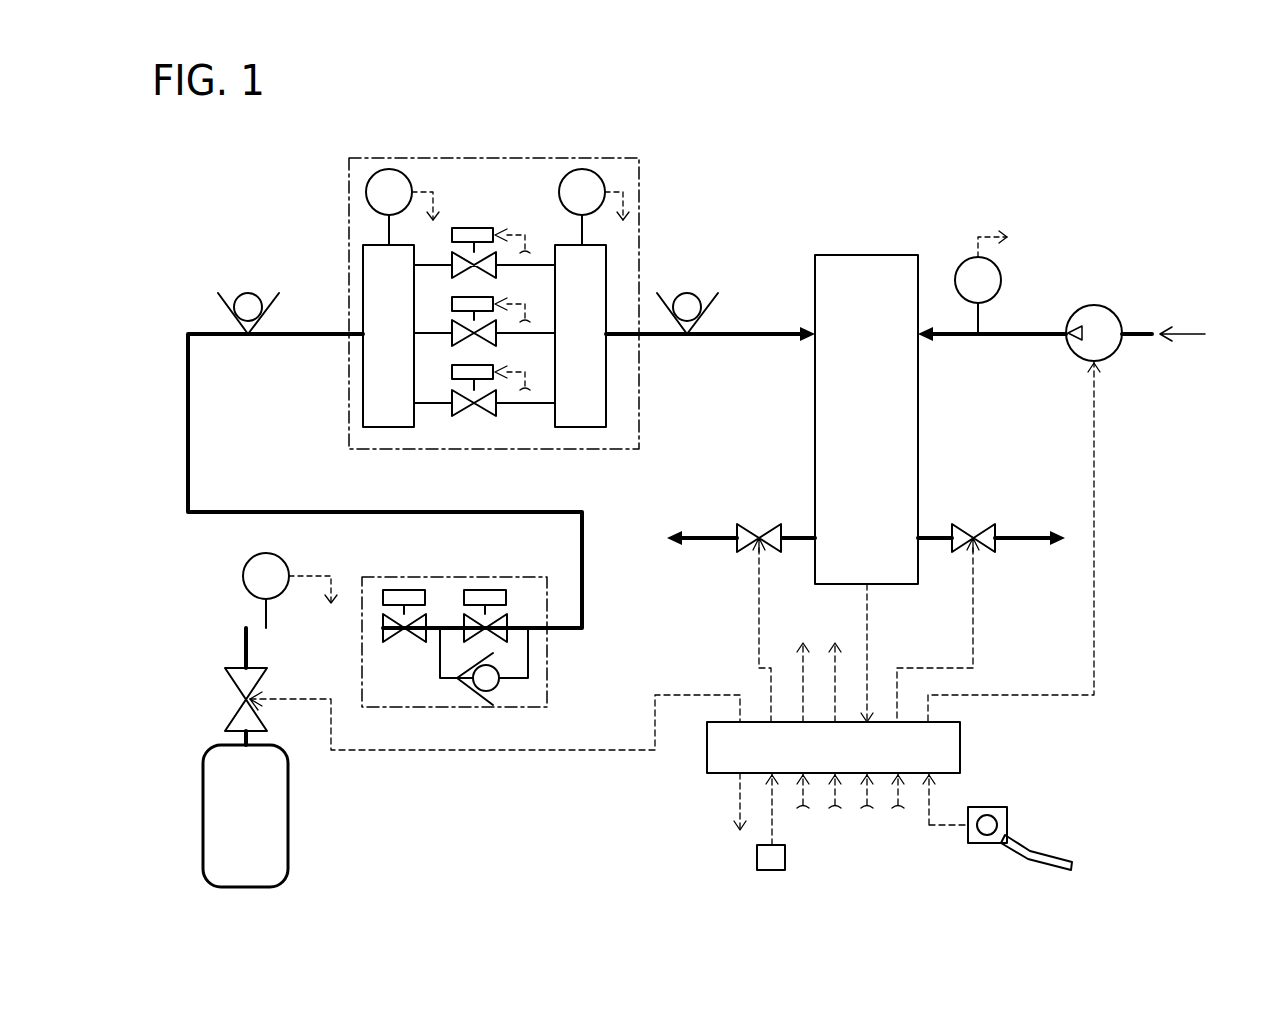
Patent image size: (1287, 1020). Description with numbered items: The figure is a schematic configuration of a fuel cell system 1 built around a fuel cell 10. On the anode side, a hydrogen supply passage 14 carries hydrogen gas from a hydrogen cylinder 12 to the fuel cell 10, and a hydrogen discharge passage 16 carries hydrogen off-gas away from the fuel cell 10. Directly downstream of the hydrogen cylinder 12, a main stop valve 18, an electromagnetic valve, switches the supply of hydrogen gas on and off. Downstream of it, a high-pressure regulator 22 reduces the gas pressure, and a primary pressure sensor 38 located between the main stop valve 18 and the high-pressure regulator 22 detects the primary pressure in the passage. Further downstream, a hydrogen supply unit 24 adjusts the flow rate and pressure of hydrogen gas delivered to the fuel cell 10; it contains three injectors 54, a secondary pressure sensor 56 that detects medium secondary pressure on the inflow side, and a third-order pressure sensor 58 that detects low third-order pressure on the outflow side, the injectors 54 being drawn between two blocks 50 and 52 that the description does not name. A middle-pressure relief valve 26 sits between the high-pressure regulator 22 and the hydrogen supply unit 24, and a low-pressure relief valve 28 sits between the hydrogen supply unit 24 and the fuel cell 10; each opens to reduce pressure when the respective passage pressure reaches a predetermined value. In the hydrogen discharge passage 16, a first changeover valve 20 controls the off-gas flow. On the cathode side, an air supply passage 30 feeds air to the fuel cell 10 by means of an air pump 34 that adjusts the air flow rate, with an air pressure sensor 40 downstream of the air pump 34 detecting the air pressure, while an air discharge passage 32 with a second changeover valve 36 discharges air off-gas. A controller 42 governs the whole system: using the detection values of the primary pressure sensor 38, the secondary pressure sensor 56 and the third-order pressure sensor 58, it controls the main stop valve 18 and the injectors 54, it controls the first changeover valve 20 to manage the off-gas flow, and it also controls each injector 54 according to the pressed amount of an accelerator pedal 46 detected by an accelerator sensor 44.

The fuel cell system 1 is at (1085, 214).
The fuel cell 10 is at (858, 255).
The hydrogen cylinder 12 is at (288, 840).
The hydrogen supply passage 14 is at (760, 334).
The hydrogen discharge passage 16 is at (703, 535).
The main stop valve 18 is at (225, 692).
The first changeover valve 20 is at (762, 524).
The high-pressure regulator 22 is at (547, 670).
The hydrogen supply unit 24 is at (349, 188).
The middle-pressure relief valve 26 is at (248, 294).
The low-pressure relief valve 28 is at (687, 294).
The air supply passage 30 is at (1032, 333).
The air discharge passage 32 is at (1023, 535).
The air pump 34 is at (1093, 305).
The second changeover valve 36 is at (975, 524).
The primary pressure sensor 38 is at (243, 578).
The air pressure sensor 40 is at (957, 268).
The controller 42 is at (960, 748).
The accelerator sensor 44 is at (1006, 818).
The accelerator pedal 46 is at (1047, 858).
The inlet manifold 50 is at (375, 348).
The outlet manifold 52 is at (567, 348).
The injectors 54 is at (473, 228).
The secondary pressure sensor 56 is at (367, 183).
The third-order pressure sensor 58 is at (603, 184).